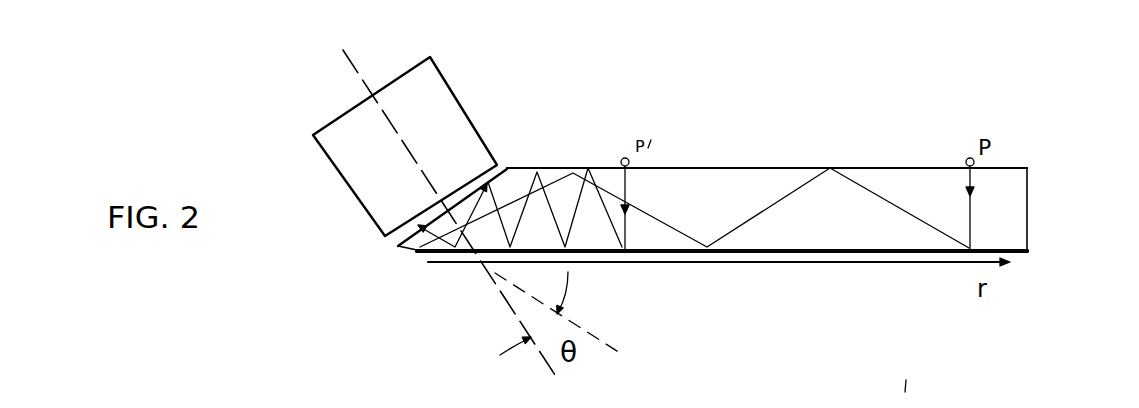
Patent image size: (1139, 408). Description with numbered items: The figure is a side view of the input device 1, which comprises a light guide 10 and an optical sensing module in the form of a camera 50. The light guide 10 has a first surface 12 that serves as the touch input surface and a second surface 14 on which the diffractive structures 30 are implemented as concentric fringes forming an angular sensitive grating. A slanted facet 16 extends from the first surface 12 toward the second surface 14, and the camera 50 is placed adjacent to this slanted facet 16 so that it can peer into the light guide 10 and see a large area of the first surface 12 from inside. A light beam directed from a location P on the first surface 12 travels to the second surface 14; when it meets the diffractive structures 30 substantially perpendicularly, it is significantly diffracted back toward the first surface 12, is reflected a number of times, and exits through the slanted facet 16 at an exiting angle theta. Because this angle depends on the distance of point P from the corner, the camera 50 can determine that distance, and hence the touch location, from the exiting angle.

The input device 1 is at (890, 62).
The light guide 10 is at (997, 208).
The first surface 12 is at (768, 167).
The second surface 14 is at (1017, 252).
The slanted facet 16 is at (412, 245).
The diffractive structures 30 is at (886, 253).
The camera 50 is at (455, 100).